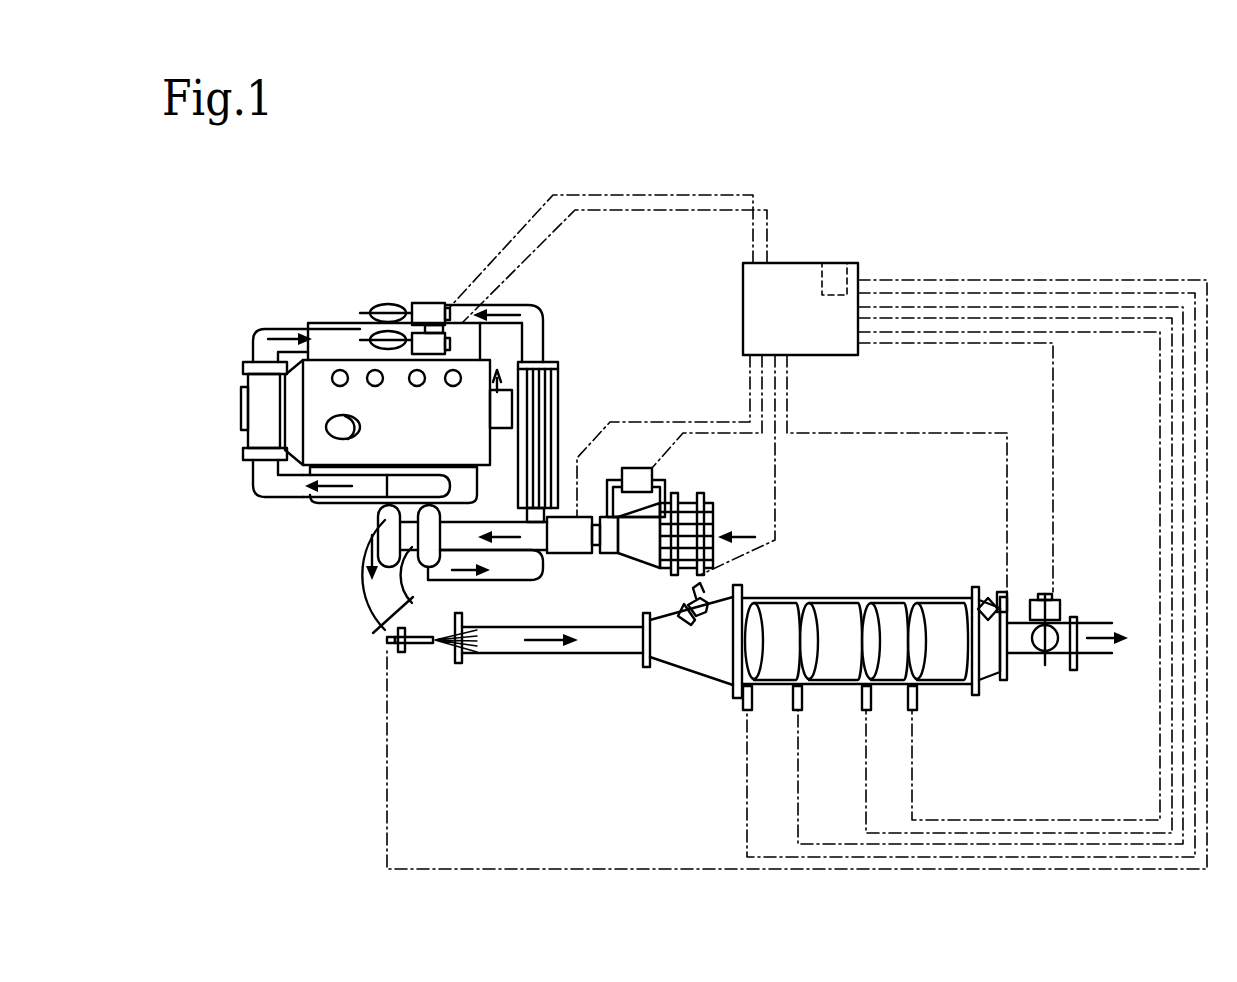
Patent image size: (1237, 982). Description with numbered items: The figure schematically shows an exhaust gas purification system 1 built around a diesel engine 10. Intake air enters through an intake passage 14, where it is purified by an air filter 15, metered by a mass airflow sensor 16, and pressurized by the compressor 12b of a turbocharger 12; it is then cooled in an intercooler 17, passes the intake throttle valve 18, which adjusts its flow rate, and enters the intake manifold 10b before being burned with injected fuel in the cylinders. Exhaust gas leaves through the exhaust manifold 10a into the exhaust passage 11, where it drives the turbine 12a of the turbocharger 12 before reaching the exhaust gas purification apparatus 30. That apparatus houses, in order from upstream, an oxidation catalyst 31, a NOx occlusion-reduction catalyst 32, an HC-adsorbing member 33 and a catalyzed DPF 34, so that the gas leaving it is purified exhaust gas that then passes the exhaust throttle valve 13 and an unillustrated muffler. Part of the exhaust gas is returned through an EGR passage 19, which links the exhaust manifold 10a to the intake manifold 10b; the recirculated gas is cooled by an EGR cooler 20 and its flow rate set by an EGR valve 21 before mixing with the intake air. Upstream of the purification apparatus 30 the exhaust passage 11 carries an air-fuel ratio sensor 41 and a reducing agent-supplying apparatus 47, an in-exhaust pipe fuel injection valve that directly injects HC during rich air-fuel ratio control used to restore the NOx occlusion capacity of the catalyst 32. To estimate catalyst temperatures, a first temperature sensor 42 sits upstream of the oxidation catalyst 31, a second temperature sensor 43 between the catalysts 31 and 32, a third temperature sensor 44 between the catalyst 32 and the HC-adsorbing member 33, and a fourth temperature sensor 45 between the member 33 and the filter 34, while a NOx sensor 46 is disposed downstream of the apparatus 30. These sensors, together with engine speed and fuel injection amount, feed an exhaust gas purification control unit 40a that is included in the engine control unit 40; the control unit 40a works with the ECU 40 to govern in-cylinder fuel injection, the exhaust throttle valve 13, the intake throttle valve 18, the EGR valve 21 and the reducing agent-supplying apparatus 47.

The exhaust gas purification system 1 is at (952, 243).
The diesel engine 10 is at (422, 443).
The exhaust manifold 10a is at (307, 500).
The intake manifold 10b is at (312, 323).
The exhaust passage 11 is at (510, 655).
The turbocharger 12 is at (363, 603).
The turbine 12a is at (375, 522).
The compressor 12b is at (437, 560).
The exhaust throttle valve 13 is at (1053, 607).
The intake passage 14 is at (537, 323).
The air filter 15 is at (648, 548).
The mass airflow sensor 16 is at (570, 550).
The intercooler 17 is at (548, 397).
The intake throttle valve 18 is at (432, 303).
The EGR passage 19 is at (260, 343).
The EGR cooler 20 is at (257, 430).
The EGR valve 21 is at (408, 308).
The exhaust gas purification apparatus 30 is at (860, 597).
The oxidation catalyst 31 is at (768, 612).
The NOx occlusion-reduction catalyst 32 is at (820, 613).
The HC-adsorbing member 33 is at (887, 613).
The catalyzed DPF 34 is at (933, 613).
The engine control unit 40 is at (796, 268).
The exhaust gas purification control unit 40a is at (836, 268).
The air-fuel ratio sensor 41 is at (698, 615).
The first temperature sensor 42 is at (750, 712).
The second temperature sensor 43 is at (800, 712).
The third temperature sensor 44 is at (868, 712).
The fourth temperature sensor 45 is at (915, 712).
The NOx sensor 46 is at (990, 593).
The reducing agent-supplying apparatus 47 is at (406, 652).